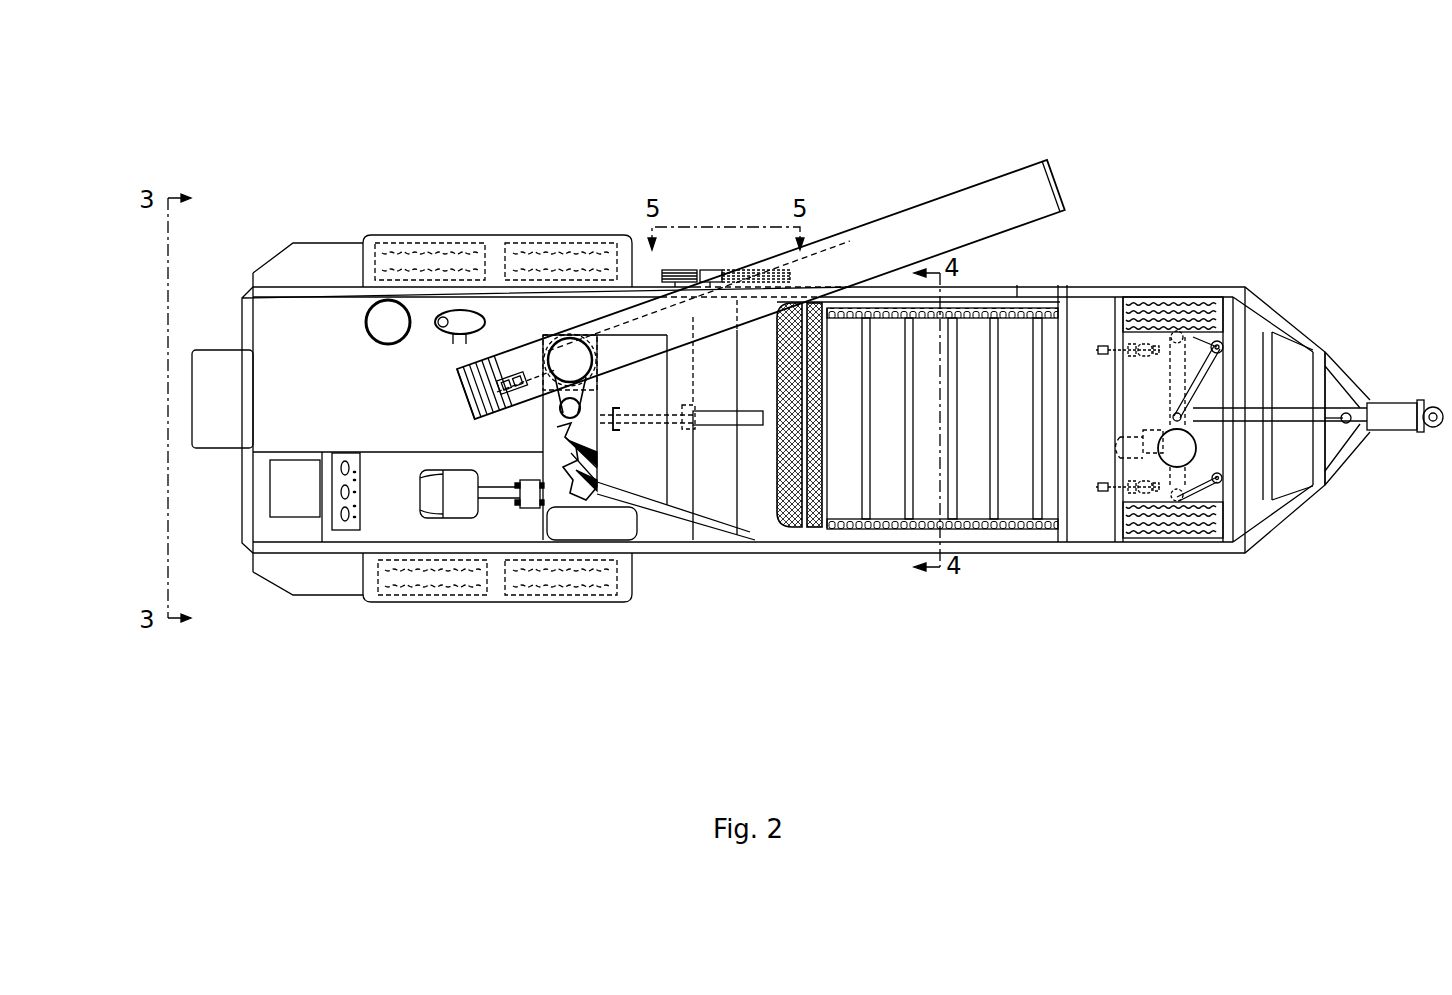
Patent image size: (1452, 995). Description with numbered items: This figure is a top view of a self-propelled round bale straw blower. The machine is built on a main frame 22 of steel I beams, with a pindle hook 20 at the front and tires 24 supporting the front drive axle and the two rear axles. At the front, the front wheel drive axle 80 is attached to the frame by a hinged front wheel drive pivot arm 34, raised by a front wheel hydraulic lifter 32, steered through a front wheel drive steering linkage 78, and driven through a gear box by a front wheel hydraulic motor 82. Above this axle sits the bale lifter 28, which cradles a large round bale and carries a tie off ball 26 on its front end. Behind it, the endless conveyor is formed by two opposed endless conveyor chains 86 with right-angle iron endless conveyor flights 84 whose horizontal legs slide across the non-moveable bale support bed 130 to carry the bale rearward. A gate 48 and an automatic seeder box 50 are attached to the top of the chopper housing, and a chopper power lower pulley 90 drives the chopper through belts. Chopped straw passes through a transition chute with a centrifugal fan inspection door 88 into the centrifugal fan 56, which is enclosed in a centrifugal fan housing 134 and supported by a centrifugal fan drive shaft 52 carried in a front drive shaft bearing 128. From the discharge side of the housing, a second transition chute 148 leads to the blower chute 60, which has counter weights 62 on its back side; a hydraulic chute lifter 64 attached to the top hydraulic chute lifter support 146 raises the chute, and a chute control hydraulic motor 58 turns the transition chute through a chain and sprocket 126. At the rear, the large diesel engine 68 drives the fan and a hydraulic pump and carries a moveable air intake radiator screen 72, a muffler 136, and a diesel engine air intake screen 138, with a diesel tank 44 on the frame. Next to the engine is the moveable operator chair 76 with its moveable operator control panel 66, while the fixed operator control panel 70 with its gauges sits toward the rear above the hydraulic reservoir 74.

The pindle hook 20 is at (1437, 430).
The main frame 22 is at (1188, 283).
The tires 24 is at (385, 258).
The tie off ball 26 is at (1340, 397).
The bale lifter 28 is at (1290, 492).
The front wheel hydraulic lifter 32 is at (1140, 345).
The front wheel drive pivot arm 34 is at (1157, 300).
The diesel tank 44 is at (588, 525).
The gate 48 is at (786, 540).
The automatic seeder box 50 is at (772, 547).
The centrifugal fan drive shaft 52 is at (756, 533).
The centrifugal fan 56 is at (575, 478).
The chute control hydraulic motor 58 is at (588, 345).
The blower chute 60 is at (938, 200).
The counter weights 62 is at (505, 378).
The hydraulic chute lifter 64 is at (528, 372).
The moveable operator control panel 66 is at (550, 488).
The diesel engine 68 is at (347, 392).
The fixed operator control panel 70 is at (343, 567).
The moveable air intake radiator screen 72 is at (212, 350).
The hydraulic reservoir 74 is at (270, 490).
The moveable operator chair 76 is at (343, 533).
The front wheel drive steering linkage 78 is at (1233, 358).
The front wheel drive axle 80 is at (1155, 517).
The front wheel hydraulic motor 82 is at (1115, 445).
The endless conveyor flight 84 is at (1000, 403).
The endless conveyor chain 86 is at (980, 303).
The centrifugal fan inspection door 88 is at (658, 477).
The chopper power lower pulley 90 is at (668, 268).
The chain and sprocket 126 is at (612, 390).
The front drive shaft bearing 128 is at (667, 500).
The bale support bed 130 is at (977, 483).
The centrifugal fan housing 134 is at (528, 512).
The muffler 136 is at (413, 307).
The diesel engine air intake screen 138 is at (447, 315).
The top hydraulic chute lifter support 146 is at (478, 368).
The transition chute 148 is at (698, 410).